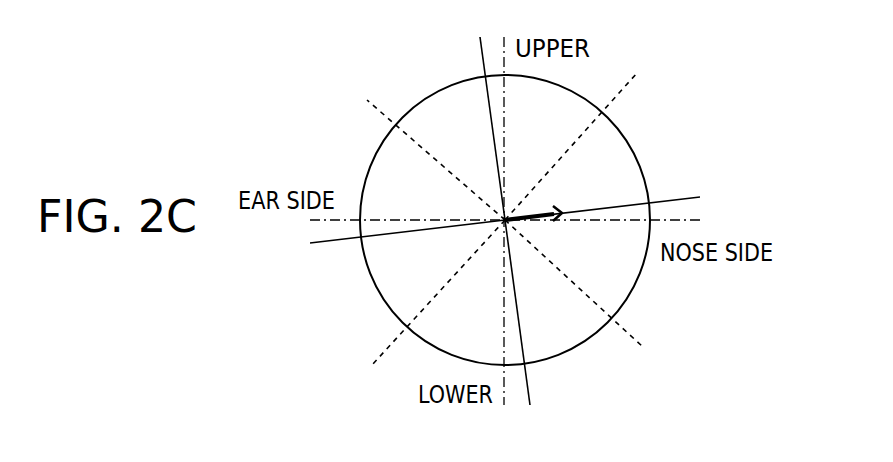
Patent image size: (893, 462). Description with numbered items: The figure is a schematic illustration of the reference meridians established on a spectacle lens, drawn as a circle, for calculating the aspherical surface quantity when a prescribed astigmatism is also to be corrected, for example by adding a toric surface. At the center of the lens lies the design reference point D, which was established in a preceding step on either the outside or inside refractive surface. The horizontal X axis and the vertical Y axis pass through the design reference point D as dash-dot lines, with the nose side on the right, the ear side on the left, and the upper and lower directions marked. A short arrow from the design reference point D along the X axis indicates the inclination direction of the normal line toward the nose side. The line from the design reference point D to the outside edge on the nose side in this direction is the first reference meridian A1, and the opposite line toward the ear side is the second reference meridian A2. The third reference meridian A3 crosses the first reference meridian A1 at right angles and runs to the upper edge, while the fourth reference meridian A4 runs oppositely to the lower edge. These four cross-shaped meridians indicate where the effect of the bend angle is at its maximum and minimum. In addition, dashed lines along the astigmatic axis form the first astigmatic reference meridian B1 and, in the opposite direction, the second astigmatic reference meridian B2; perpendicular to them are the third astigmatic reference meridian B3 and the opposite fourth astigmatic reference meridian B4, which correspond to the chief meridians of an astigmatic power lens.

The first reference meridian A1 is at (617, 199).
The second reference meridian A2 is at (392, 242).
The third reference meridian A3 is at (485, 112).
The fourth reference meridian A4 is at (524, 327).
The first astigmatic reference meridian B1 is at (582, 134).
The second astigmatic reference meridian B2 is at (427, 309).
The third astigmatic reference meridian B3 is at (422, 146).
The fourth astigmatic reference meridian B4 is at (587, 297).
The design reference point D is at (533, 228).
The X axis X is at (520, 222).
The Y axis Y is at (504, 205).